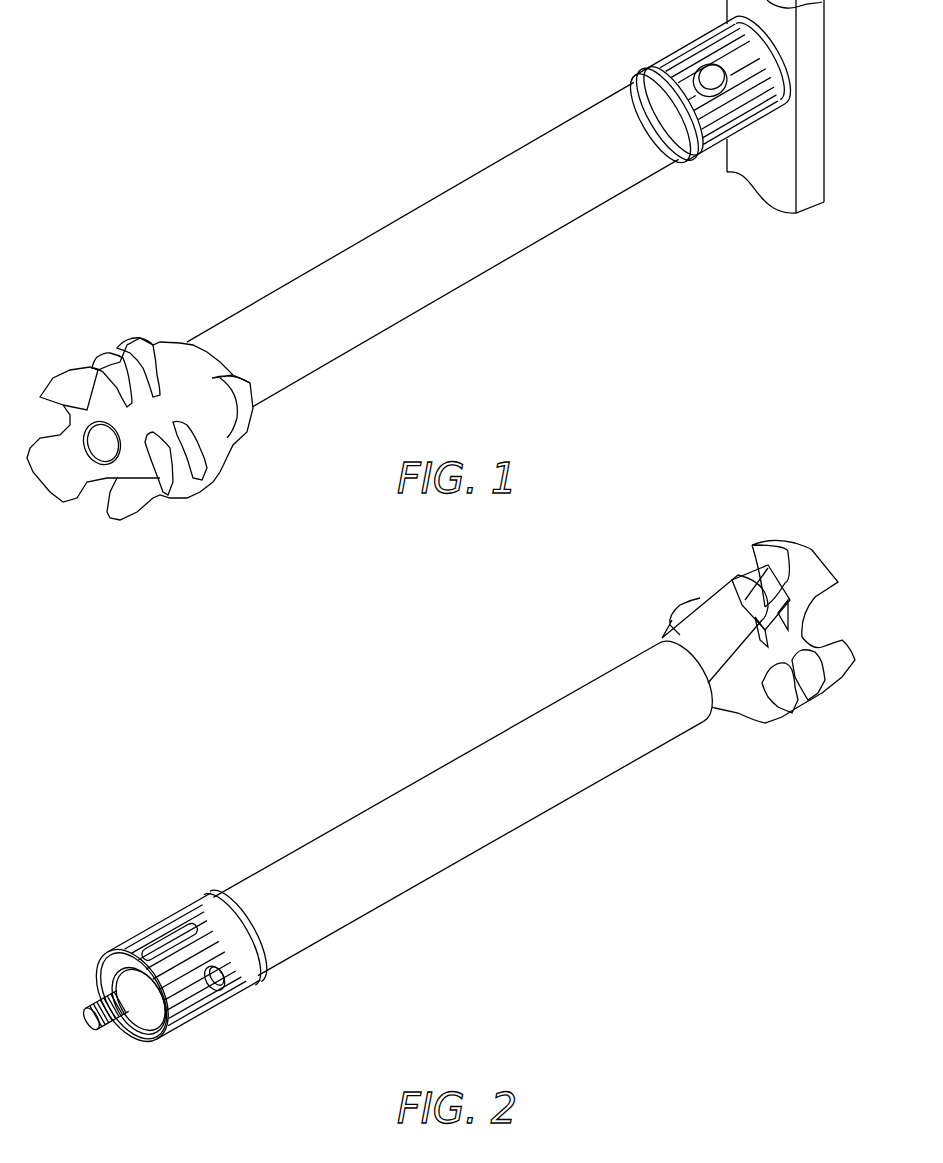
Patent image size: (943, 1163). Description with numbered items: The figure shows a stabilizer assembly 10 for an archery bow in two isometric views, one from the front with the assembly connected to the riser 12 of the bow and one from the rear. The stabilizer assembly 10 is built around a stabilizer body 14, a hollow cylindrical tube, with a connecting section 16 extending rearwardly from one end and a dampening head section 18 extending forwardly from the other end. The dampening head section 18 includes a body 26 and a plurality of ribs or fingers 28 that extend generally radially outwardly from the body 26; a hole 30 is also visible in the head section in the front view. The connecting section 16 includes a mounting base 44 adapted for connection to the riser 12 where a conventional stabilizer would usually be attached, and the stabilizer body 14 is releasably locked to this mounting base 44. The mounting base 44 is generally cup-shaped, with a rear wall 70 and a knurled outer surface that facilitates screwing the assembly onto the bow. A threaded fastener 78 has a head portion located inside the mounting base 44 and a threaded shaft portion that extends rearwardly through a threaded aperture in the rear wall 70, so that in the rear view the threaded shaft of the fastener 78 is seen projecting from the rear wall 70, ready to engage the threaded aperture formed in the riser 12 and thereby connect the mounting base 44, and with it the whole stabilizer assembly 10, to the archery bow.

In FIG. 1, the stabilizer assembly 10 is at (177, 127).
In FIG. 2, the stabilizer assembly 10 is at (330, 770).
In FIG. 1, the riser 12 is at (810, 102).
In FIG. 1, the stabilizer body 14 is at (382, 222).
In FIG. 2, the stabilizer body 14 is at (462, 753).
In FIG. 1, the connecting section 16 is at (666, 53).
In FIG. 2, the connecting section 16 is at (130, 928).
In FIG. 1, the dampening head section 18 is at (132, 333).
In FIG. 2, the dampening head section 18 is at (813, 545).
In FIG. 1, the body 26 is at (213, 387).
In FIG. 2, the body 26 is at (805, 637).
In FIG. 1, the ribs or fingers 28 is at (70, 372).
In FIG. 2, the ribs or fingers 28 is at (765, 552).
In FIG. 1, the hole 30 is at (103, 443).
In FIG. 1, the mounting base 44 is at (709, 80).
In FIG. 2, the mounting base 44 is at (214, 979).
In FIG. 2, the rear wall 70 is at (132, 995).
In FIG. 2, the threaded fastener 78 is at (104, 1011).